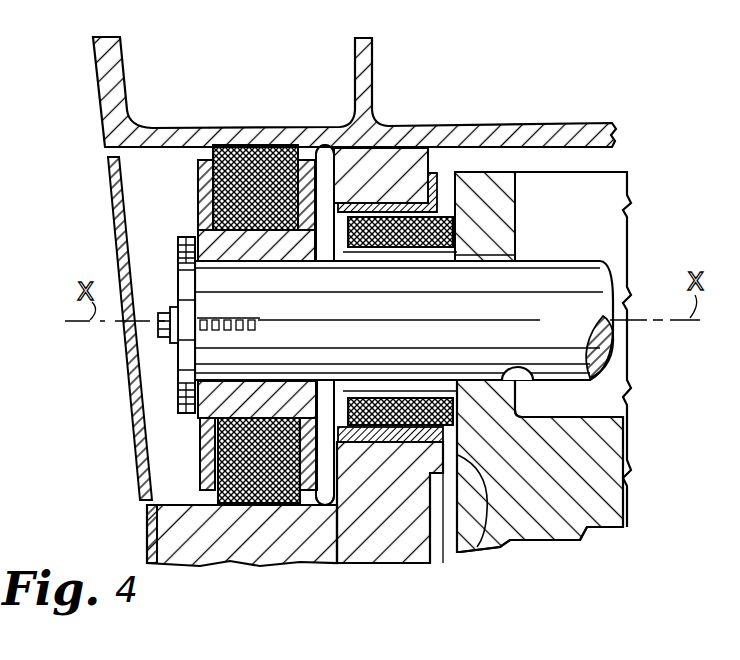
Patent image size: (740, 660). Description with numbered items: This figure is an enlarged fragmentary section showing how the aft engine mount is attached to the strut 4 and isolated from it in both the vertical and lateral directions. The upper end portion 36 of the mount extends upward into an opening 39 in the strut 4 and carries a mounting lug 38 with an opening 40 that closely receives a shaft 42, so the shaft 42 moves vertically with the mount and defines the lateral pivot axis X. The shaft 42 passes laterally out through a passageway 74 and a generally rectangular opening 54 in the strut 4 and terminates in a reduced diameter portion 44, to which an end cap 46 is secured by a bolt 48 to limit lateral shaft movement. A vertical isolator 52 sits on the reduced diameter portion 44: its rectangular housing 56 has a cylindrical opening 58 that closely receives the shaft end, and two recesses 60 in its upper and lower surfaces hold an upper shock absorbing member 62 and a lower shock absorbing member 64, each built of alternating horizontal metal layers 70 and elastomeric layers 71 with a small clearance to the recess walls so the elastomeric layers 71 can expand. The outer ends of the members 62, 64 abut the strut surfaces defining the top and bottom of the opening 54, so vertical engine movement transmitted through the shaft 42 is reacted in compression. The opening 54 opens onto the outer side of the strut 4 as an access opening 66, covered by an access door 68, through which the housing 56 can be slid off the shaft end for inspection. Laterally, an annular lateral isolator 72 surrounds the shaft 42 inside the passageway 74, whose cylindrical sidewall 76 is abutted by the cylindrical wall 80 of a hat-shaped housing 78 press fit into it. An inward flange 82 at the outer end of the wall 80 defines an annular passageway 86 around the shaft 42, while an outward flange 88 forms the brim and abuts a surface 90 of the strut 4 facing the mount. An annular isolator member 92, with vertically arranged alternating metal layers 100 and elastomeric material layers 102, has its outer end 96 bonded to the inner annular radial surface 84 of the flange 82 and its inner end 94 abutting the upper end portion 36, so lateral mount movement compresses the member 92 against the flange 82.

The strut 4 is at (382, 130).
The upper end portion 36 is at (625, 482).
The mounting lug 38 is at (517, 197).
The opening 39 is at (450, 520).
The opening 40 is at (533, 380).
The shaft 42 is at (570, 313).
The reduced diameter portion 44 is at (208, 288).
The end cap 46 is at (197, 415).
The bolt 48 is at (160, 323).
The vertical isolator 52 is at (190, 195).
The opening 54 is at (180, 490).
The housing 56 is at (205, 222).
The cylindrical opening 58 is at (255, 383).
The recess 60 is at (212, 147).
The upper shock absorbing member 62 is at (268, 145).
The lower shock absorbing member 64 is at (257, 507).
The access opening 66 is at (147, 502).
The access door 68 is at (112, 222).
The metal layer 70 is at (335, 150).
The elastomeric layer 71 is at (315, 145).
The lateral isolator 72 is at (448, 190).
The passageway 74 is at (505, 245).
The cylindrical sidewall 76 is at (440, 475).
The hat-shaped housing 78 is at (443, 193).
The cylindrical wall 80 is at (402, 215).
The flange 82 is at (347, 425).
The inner annular radial surface 84 is at (378, 445).
The annular passageway 86 is at (320, 232).
The flange 88 is at (512, 546).
The surface 90 is at (462, 548).
The annular isolator member 92 is at (375, 252).
The laterally inner end 94 is at (465, 225).
The laterally outer end 96 is at (316, 240).
The metal layer 100 is at (398, 398).
The elastomeric material layer 102 is at (413, 397).